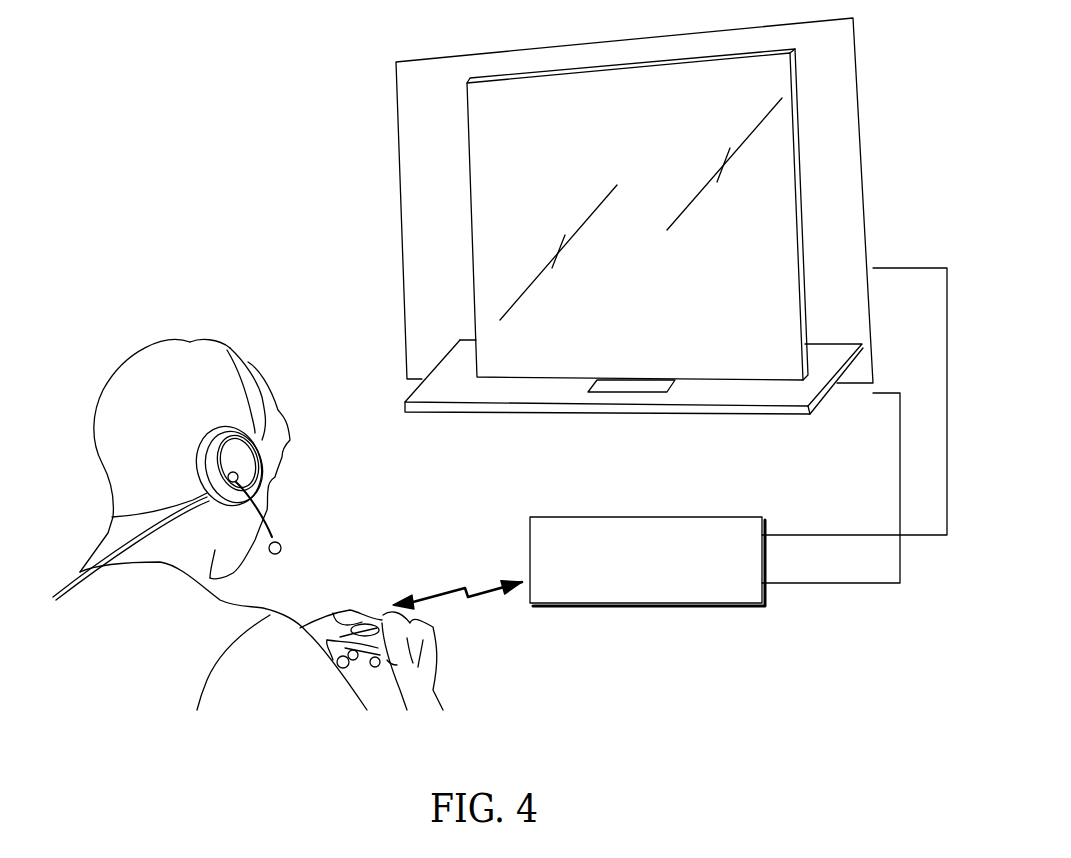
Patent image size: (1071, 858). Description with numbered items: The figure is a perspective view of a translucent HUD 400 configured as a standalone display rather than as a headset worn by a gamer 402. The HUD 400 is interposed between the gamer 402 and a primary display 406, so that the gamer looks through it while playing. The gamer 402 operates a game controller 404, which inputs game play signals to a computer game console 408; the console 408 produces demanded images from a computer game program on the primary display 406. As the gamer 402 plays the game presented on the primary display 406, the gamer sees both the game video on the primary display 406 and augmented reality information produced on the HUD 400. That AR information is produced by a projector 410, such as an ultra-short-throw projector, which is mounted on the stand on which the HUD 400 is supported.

The HUD 400 is at (768, 205).
The gamer 402 is at (102, 393).
The game controller 404 is at (367, 618).
The primary display 406 is at (865, 163).
The computer game console 408 is at (762, 558).
The projector 410 is at (628, 395).